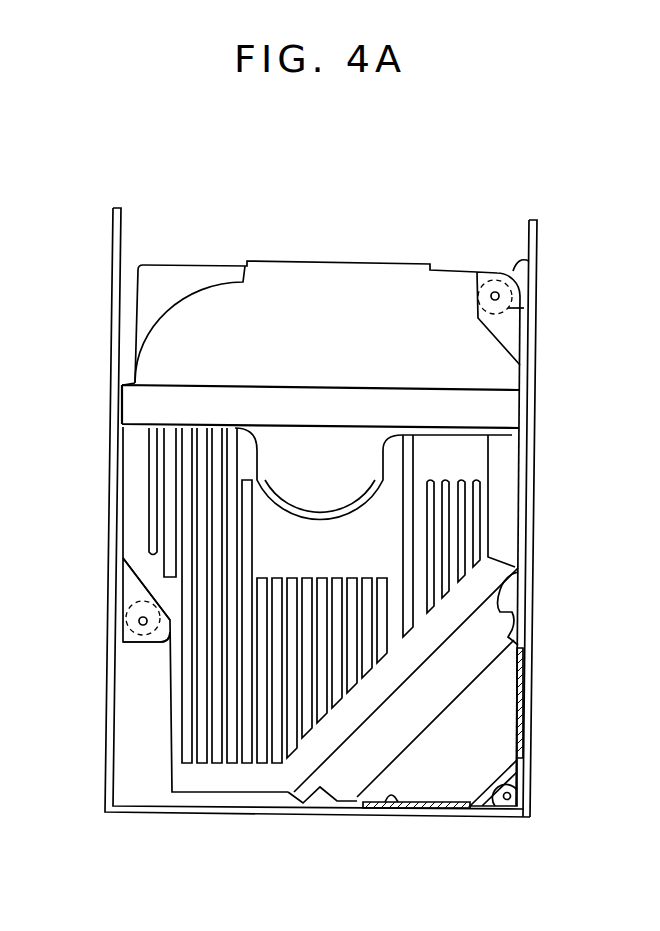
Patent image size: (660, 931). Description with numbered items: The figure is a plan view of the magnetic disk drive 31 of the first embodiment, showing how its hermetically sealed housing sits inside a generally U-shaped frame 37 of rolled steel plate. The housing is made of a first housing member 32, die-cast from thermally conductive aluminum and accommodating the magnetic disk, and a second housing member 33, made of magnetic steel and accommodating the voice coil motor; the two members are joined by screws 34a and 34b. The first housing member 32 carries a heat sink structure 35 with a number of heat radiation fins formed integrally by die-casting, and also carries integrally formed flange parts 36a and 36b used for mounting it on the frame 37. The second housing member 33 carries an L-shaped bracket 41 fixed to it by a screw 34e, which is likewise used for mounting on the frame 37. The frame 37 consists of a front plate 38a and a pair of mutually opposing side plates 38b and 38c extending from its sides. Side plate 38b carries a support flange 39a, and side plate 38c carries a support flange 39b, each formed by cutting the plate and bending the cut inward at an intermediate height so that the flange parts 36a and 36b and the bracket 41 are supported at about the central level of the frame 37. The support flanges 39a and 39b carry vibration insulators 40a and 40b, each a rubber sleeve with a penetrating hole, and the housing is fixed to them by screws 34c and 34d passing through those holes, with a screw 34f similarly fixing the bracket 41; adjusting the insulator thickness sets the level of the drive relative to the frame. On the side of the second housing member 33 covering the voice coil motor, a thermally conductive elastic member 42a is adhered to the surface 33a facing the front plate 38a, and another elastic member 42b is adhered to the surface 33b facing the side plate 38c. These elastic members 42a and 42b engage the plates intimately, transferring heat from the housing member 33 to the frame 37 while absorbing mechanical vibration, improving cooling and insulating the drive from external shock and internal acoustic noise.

The magnetic disk drive 31 is at (352, 266).
The first housing member 32 is at (518, 457).
The second housing member 33 is at (512, 672).
The surface of second housing member 33a is at (388, 812).
The surface of second housing member 33b is at (514, 704).
The screw 34a is at (522, 602).
The screw 34b is at (312, 810).
The screw 34c is at (140, 622).
The screw 34d is at (524, 308).
The screw 34e is at (520, 776).
The screw 34f is at (520, 798).
The heat sink structure 35 is at (489, 522).
The flange part 36a is at (122, 566).
The flange part 36b is at (483, 273).
The frame 37 is at (540, 220).
The front plate 38a is at (250, 816).
The side plate 38b is at (114, 374).
The side plate 38c is at (538, 360).
The support flange 39a is at (135, 648).
The support flange 39b is at (535, 263).
The vibration insulator 40a is at (128, 603).
The vibration insulator 40b is at (512, 293).
The L-shaped bracket 41 is at (508, 812).
The thermally conductive elastic member 42a is at (446, 812).
The thermally conductive elastic member 42b is at (524, 729).